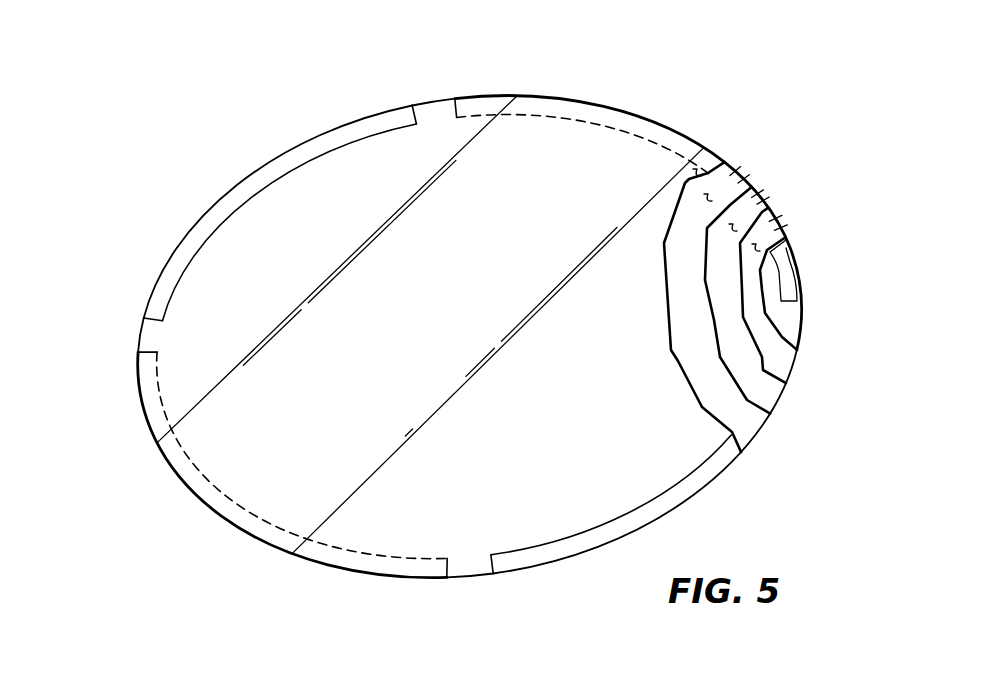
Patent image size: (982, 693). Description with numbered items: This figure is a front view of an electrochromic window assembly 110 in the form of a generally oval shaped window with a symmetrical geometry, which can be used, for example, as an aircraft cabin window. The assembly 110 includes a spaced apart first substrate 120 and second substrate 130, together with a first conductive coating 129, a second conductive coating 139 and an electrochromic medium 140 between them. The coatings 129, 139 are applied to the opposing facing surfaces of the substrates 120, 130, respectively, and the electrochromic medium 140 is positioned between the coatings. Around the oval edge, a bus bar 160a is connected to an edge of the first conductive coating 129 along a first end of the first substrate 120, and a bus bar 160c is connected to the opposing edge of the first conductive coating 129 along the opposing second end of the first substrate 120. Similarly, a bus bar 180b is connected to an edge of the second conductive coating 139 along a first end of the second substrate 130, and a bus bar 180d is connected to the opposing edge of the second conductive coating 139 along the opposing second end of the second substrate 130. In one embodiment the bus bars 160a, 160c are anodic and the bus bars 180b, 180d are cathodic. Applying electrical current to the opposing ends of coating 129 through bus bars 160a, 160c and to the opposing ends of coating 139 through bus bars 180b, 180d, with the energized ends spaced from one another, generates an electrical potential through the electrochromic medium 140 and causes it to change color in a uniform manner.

The electrochromic window assembly 110 is at (158, 123).
The first substrate 120 is at (446, 130).
The first conductive coating 129 is at (730, 171).
The second substrate 130 is at (791, 325).
The second conductive coating 139 is at (777, 222).
The electrochromic medium 140 is at (760, 193).
The bus bar 160a is at (327, 133).
The bus bar 160c is at (695, 488).
The bus bar 180b is at (647, 127).
The bus bar 180d is at (228, 507).